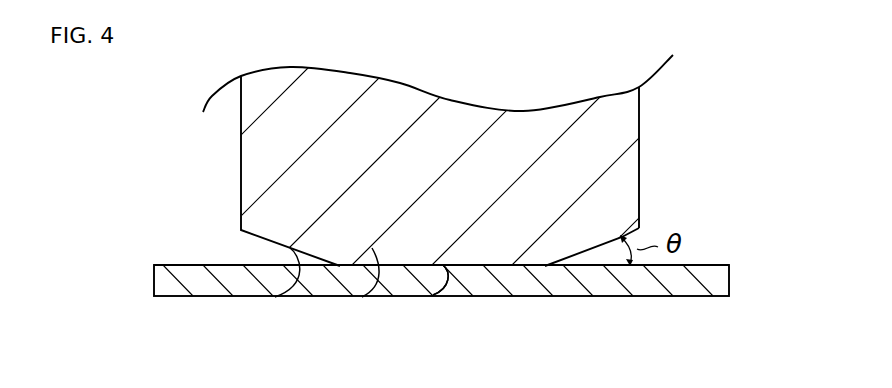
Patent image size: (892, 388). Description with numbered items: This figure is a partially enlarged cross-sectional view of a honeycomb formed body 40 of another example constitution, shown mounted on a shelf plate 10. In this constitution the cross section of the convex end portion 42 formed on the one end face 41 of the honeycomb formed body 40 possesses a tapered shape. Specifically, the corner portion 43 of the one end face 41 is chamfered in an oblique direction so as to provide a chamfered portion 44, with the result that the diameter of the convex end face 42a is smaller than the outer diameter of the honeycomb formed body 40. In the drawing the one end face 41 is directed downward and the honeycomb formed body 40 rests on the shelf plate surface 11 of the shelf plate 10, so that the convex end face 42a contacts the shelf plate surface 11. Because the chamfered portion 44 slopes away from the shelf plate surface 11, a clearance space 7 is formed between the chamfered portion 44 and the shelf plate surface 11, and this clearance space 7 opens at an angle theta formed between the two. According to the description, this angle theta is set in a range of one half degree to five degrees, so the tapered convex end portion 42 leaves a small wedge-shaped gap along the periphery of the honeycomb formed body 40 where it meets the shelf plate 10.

The honeycomb formed body 40 is at (713, 91).
The corner portion 43 is at (634, 226).
The shelf plate 10 is at (712, 283).
The shelf plate surface 11 is at (165, 264).
The chamfered portion 44 is at (275, 297).
The convex end portion 42 is at (362, 297).
The convex end face 42a is at (433, 295).
The one end face 41 is at (440, 280).
The clearance space 7 is at (235, 251).